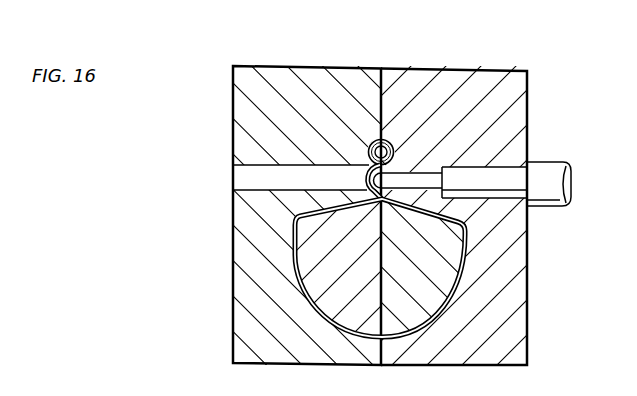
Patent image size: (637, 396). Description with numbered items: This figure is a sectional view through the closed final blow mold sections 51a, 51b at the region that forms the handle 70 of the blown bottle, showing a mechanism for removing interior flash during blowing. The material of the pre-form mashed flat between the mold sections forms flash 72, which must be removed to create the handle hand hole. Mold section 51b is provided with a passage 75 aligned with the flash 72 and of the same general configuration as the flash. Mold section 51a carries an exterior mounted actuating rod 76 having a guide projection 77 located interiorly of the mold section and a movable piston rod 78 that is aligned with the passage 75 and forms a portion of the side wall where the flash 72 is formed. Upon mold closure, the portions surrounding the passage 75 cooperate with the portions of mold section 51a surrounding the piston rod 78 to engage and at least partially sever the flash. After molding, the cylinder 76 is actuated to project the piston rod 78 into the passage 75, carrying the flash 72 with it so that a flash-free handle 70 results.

The final blow mold section 51a is at (516, 81).
The final blow mold section 51b is at (247, 72).
The handle 70 is at (448, 293).
The flash 72 is at (366, 199).
The passage 75 is at (233, 176).
The actuating rod 76 is at (567, 178).
The guide projection 77 is at (511, 198).
The piston rod 78 is at (390, 188).